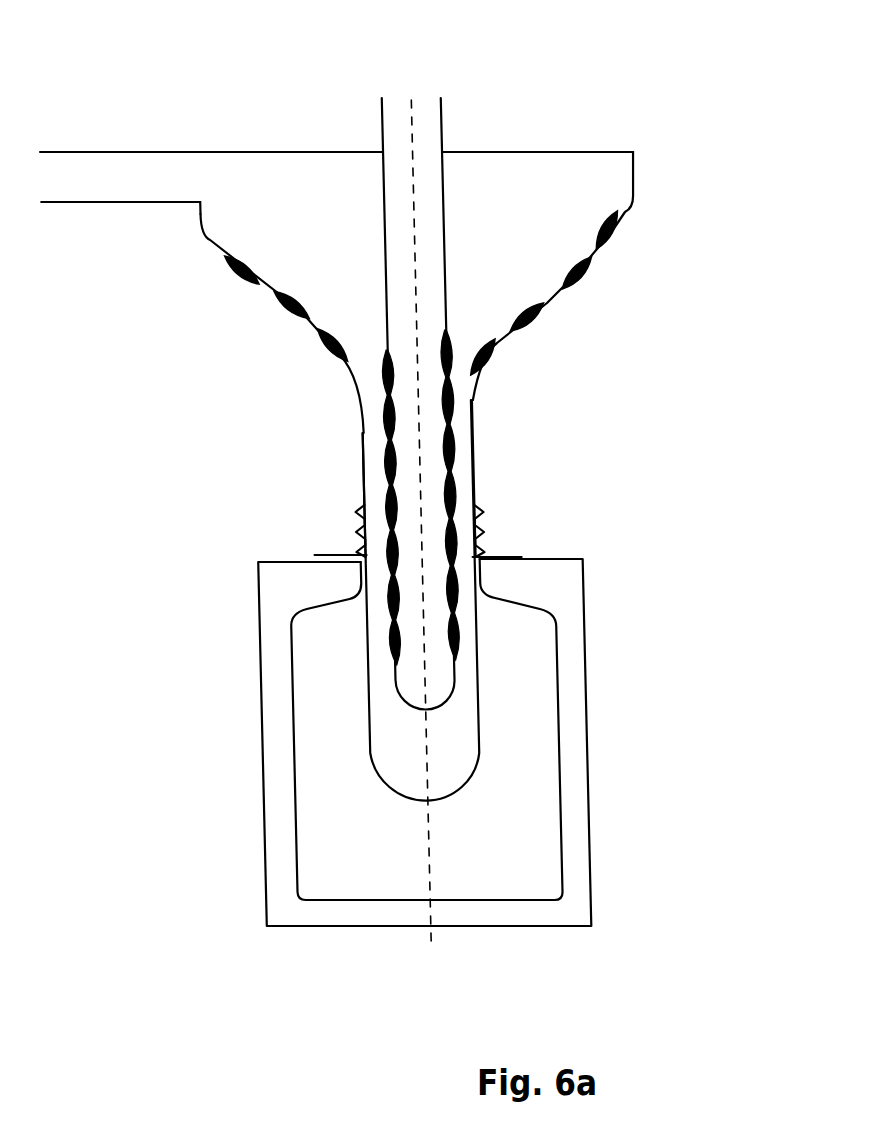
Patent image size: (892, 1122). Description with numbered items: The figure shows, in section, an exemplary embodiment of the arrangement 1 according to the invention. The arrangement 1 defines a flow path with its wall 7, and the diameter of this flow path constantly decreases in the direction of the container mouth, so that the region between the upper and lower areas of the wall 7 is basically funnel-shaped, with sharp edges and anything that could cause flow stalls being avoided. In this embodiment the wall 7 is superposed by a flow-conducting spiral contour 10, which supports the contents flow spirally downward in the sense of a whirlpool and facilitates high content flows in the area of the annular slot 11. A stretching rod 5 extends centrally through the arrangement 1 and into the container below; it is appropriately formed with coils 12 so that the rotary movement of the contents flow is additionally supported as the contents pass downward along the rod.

The arrangement 1 is at (675, 313).
The stretching rod 5 is at (428, 117).
The wall 7 is at (573, 297).
The flow-conducting spiral contour 10 is at (622, 230).
The annular slot 11 is at (373, 532).
The coils 12 is at (452, 453).